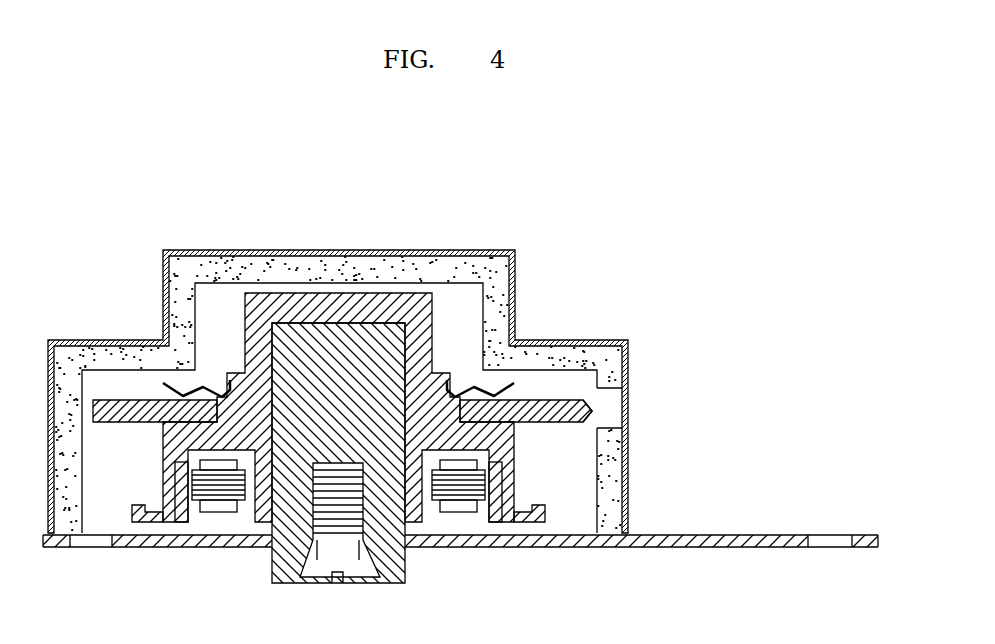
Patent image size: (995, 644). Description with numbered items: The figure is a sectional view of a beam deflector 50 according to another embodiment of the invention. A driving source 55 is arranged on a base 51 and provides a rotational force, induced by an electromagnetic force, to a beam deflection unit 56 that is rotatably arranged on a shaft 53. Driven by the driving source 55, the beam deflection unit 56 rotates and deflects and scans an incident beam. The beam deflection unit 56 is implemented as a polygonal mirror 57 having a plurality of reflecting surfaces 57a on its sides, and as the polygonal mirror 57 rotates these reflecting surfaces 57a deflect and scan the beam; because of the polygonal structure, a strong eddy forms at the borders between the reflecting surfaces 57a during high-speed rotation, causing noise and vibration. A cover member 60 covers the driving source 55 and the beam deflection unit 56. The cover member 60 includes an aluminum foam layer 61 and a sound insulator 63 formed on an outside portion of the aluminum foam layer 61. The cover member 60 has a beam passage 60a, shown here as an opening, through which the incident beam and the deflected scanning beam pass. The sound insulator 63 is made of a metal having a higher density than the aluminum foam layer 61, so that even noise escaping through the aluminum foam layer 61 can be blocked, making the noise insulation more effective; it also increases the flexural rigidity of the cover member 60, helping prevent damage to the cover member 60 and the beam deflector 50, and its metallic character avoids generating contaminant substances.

The beam deflector 50 is at (594, 209).
The base 51 is at (701, 549).
The shaft 53 is at (390, 498).
The driving source 55 is at (527, 480).
The beam deflection unit 56 is at (545, 398).
The polygonal mirror 57 is at (592, 399).
The reflecting surfaces 57a is at (590, 412).
The cover member 60 is at (697, 455).
The beam passage 60a is at (618, 410).
The aluminum foam layer 61 is at (609, 485).
The sound insulator 63 is at (629, 511).